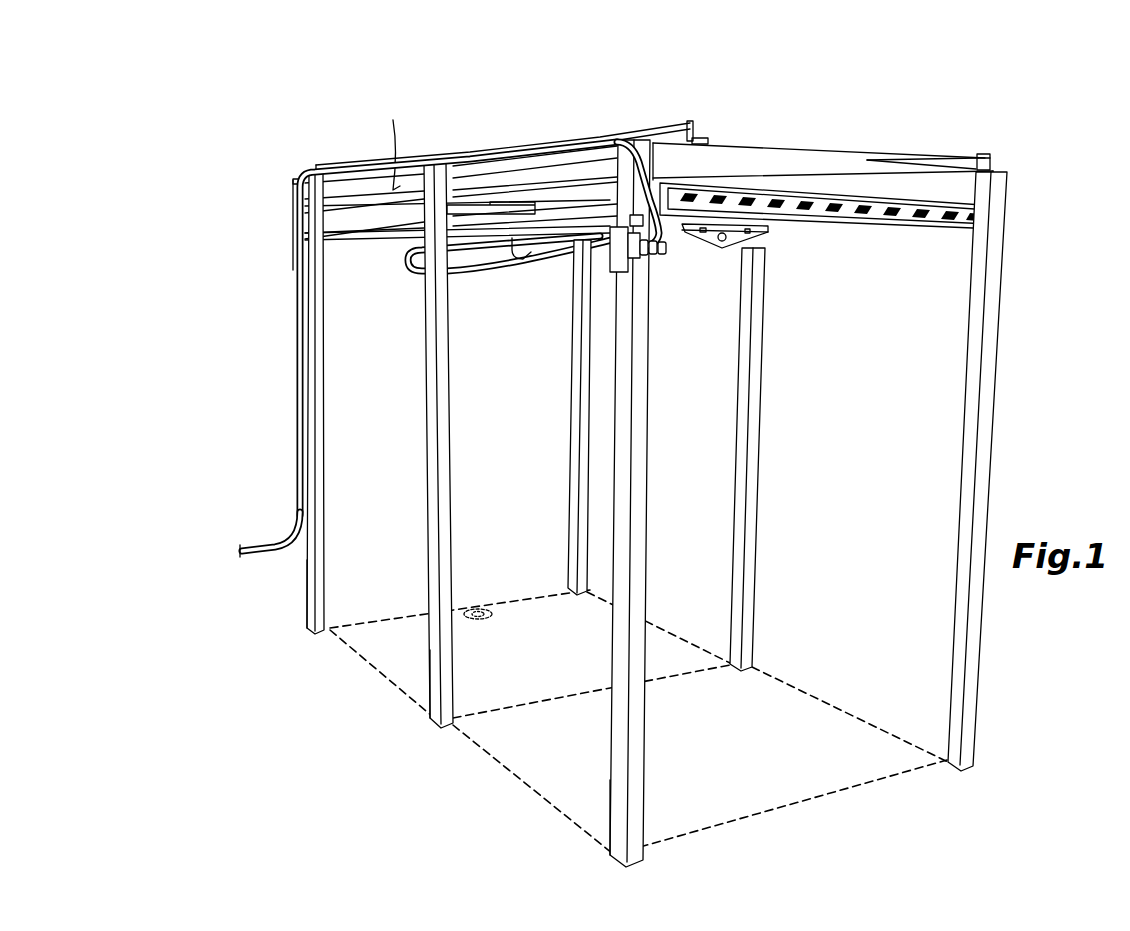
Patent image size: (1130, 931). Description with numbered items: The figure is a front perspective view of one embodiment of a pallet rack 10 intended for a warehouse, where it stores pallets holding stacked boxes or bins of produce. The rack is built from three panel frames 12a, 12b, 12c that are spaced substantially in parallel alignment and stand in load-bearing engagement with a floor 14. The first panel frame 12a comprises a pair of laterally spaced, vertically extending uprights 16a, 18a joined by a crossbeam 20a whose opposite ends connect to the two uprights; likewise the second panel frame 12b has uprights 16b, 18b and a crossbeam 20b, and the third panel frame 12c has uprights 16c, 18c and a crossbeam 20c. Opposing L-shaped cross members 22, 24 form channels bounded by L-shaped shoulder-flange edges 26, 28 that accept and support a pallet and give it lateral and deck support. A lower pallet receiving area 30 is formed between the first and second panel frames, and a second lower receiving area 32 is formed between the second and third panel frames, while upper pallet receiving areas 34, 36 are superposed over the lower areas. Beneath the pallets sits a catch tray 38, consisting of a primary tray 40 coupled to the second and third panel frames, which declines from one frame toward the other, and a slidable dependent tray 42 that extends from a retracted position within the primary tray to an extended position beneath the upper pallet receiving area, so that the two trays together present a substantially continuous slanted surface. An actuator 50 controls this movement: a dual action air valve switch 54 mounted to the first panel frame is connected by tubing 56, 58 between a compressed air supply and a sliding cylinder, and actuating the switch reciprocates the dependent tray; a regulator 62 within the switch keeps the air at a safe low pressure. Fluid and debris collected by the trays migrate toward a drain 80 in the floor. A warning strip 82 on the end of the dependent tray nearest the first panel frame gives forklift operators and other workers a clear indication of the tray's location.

The pallet rack 10 is at (1036, 121).
The panel frame 12a is at (607, 786).
The panel frame 12b is at (423, 680).
The panel frame 12c is at (300, 592).
The floor 14 is at (853, 803).
The upright 16a is at (617, 653).
The upright 16b is at (430, 541).
The upright 16c is at (307, 488).
The upright 18a is at (1000, 354).
The upright 18b is at (758, 388).
The upright 18c is at (572, 418).
The crossbeam 20a is at (810, 170).
The crossbeam 20b is at (470, 176).
The crossbeam 20c is at (350, 188).
The L-shaped cross member 22 is at (684, 127).
The L-shaped cross member 24 is at (990, 158).
The L-shaped shoulder-flange edge 26 is at (703, 137).
The L-shaped shoulder-flange edge 28 is at (978, 155).
The lower pallet receiving area 30 is at (846, 720).
The second lower receiving area 32 is at (370, 652).
The upper pallet receiving area 34 is at (549, 134).
The upper pallet receiving area 36 is at (930, 152).
The catch tray 38 is at (883, 234).
The primary tray 40 is at (350, 240).
The slidable dependent tray 42 is at (820, 217).
The actuator 50 is at (648, 262).
The dual action air valve switch 54 is at (627, 216).
The tubing 56 is at (302, 408).
The tubing 58 is at (503, 278).
The regulator 62 is at (612, 272).
The drain 80 is at (479, 606).
The warning strip 82 is at (987, 214).